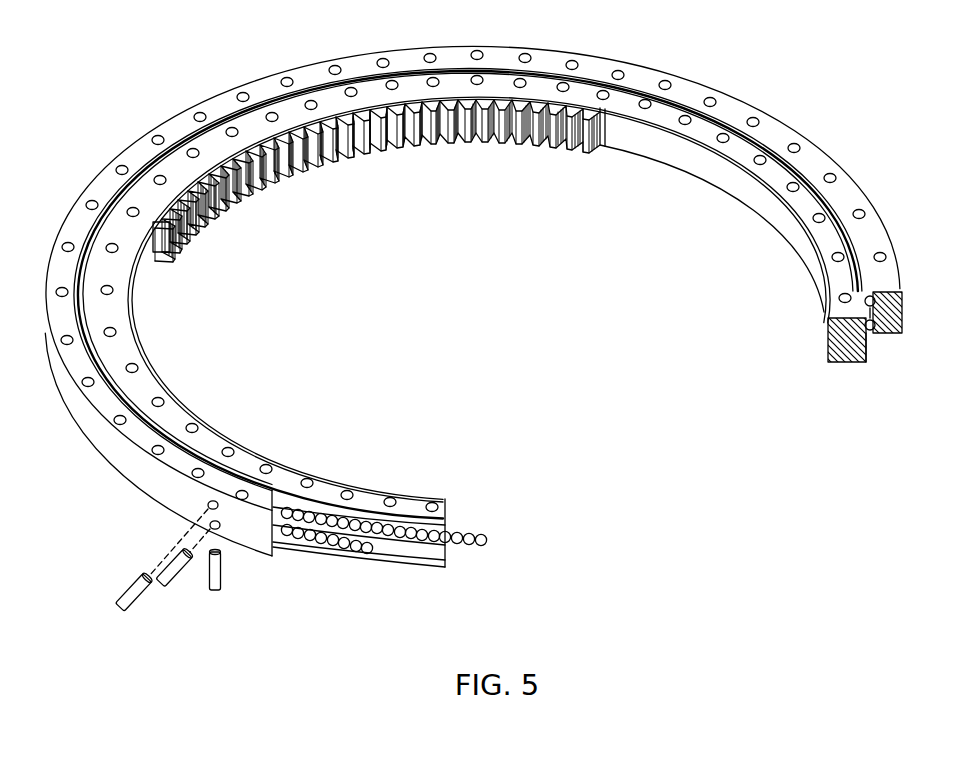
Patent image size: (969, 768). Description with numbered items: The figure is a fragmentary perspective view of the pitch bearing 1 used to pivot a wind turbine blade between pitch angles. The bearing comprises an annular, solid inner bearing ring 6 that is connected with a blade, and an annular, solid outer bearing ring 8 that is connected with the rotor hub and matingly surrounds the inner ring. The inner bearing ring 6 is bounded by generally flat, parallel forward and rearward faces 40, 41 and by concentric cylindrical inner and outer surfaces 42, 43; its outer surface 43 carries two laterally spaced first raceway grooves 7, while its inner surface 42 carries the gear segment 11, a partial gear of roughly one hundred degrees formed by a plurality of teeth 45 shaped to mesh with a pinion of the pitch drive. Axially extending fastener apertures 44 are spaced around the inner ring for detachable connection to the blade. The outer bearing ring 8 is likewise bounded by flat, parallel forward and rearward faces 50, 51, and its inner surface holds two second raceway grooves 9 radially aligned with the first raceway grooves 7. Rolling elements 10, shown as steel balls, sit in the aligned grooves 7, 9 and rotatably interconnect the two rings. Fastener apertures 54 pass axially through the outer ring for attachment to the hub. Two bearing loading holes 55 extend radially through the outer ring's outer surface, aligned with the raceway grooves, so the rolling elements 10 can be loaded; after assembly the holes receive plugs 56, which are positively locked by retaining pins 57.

The pitch bearing 1 is at (745, 95).
The inner bearing ring 6 is at (146, 388).
The first raceway grooves 7 is at (868, 349).
The outer bearing ring 8 is at (137, 433).
The second raceway grooves 9 is at (865, 306).
The rolling elements 10 is at (314, 535).
The gear segment 11 is at (376, 181).
The forward face 40 is at (842, 279).
The rearward face 41 is at (846, 362).
The inner surface 42 is at (666, 163).
The outer surface 43 is at (393, 555).
The fastener apertures 44 is at (786, 190).
The teeth 45 is at (170, 258).
The forward face 50 is at (845, 192).
The rearward face 51 is at (880, 333).
The fastener apertures 54 is at (574, 60).
The bearing loading holes 55 is at (208, 505).
The plugs 56 is at (168, 585).
The retaining pins 57 is at (218, 573).